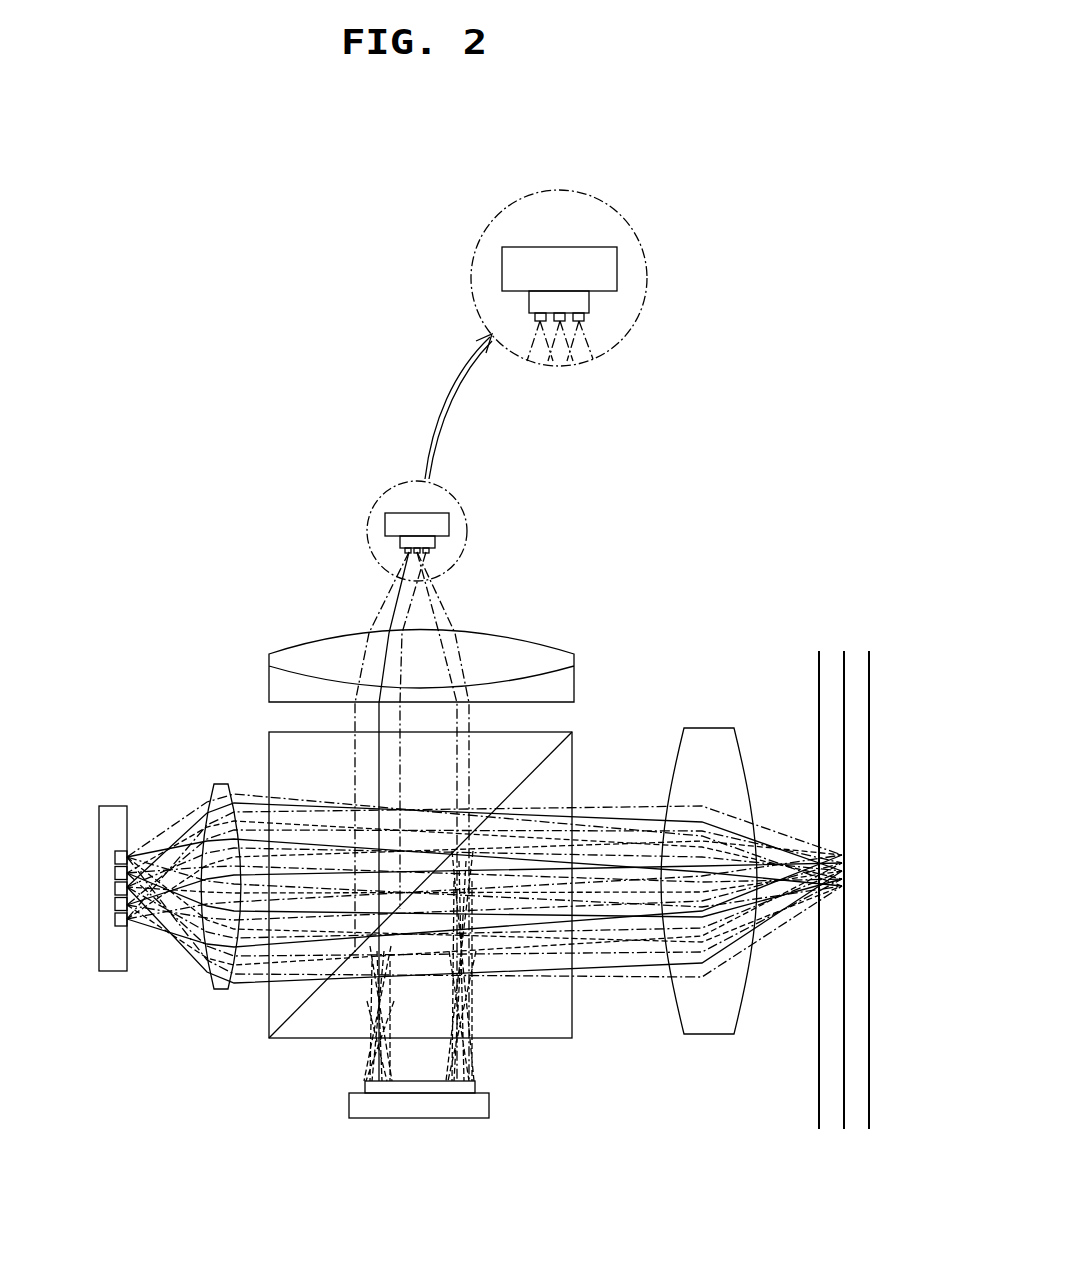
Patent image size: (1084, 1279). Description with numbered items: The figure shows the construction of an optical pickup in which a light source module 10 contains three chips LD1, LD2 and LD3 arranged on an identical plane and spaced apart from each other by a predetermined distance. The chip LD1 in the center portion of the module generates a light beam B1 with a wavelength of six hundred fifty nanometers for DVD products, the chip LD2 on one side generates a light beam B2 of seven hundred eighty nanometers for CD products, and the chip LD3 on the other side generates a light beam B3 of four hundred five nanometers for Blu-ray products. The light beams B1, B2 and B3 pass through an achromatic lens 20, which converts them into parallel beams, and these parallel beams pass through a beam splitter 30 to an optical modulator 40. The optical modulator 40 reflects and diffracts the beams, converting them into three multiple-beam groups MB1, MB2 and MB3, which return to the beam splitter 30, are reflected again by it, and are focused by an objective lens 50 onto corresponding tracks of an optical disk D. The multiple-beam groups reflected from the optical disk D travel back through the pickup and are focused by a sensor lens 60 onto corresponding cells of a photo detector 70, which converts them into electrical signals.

The light source module 10 is at (532, 265).
The chip LD1 is at (558, 320).
The chip LD2 is at (530, 312).
The chip LD3 is at (587, 312).
The light beam B1 is at (397, 610).
The light beam B2 is at (390, 581).
The light beam B3 is at (453, 608).
The achromatic lens 20 is at (520, 655).
The beam splitter 30 is at (555, 777).
The optical modulator 40 is at (363, 1105).
The multiple-beam group MB1 is at (475, 1075).
The multiple-beam group MB2 is at (363, 1048).
The multiple-beam group MB3 is at (470, 1060).
The objective lens 50 is at (712, 735).
The sensor lens 60 is at (218, 785).
The photo detector 70 is at (108, 815).
The optical disk D is at (855, 692).